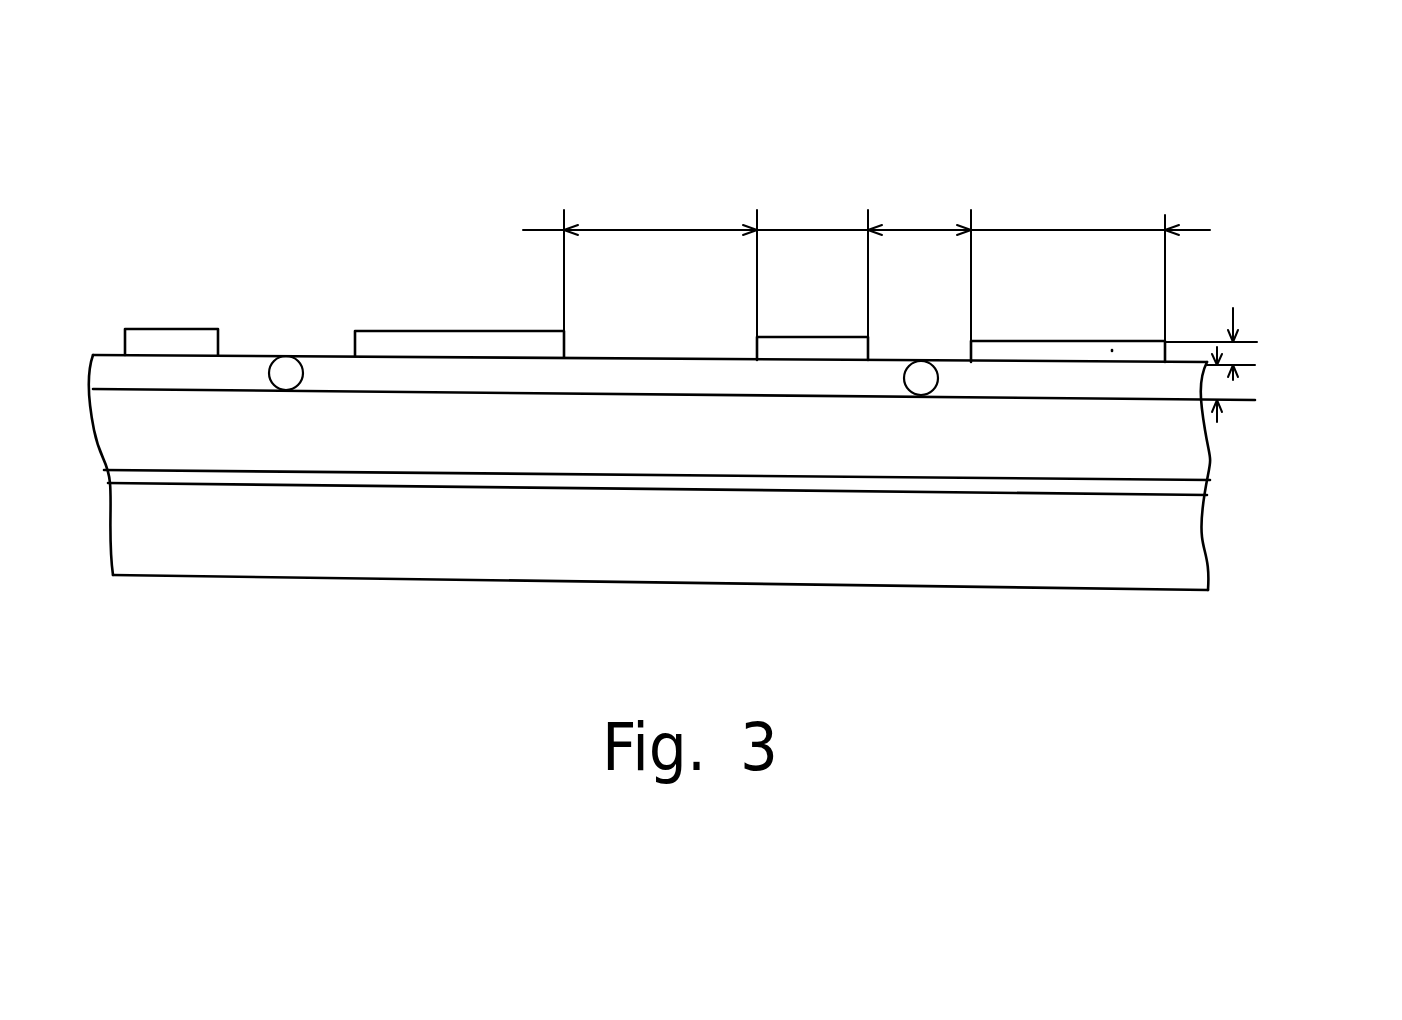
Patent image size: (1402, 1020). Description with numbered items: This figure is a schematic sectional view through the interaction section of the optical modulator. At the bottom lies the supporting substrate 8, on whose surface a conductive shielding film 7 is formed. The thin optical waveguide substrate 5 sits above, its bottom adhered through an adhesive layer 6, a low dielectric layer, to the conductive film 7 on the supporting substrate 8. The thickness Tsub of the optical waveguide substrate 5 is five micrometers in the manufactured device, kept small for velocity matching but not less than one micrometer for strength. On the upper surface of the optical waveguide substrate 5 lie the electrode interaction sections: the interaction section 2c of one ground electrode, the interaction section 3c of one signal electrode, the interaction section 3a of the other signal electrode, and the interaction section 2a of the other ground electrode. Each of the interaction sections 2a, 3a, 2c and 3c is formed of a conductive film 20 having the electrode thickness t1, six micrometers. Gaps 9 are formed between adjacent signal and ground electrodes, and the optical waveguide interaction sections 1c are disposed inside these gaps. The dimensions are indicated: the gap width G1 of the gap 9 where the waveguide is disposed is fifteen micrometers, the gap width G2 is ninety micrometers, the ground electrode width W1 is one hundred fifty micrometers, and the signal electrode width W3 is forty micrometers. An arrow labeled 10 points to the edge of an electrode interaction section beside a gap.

The optical waveguide substrate 5 is at (117, 367).
The adhesive layer 6 is at (122, 430).
The conductive film 7 is at (120, 475).
The supporting substrate 8 is at (125, 540).
The interaction section of signal electrode 3B 3c is at (185, 340).
The interaction section of ground electrode 2B 2c is at (478, 342).
The interaction section of signal electrode 3A 3a is at (787, 347).
The interaction section of ground electrode 2A 2a is at (1032, 350).
The interaction section 1c is at (287, 368).
The conductive film 20 is at (1112, 350).
The electrode edge 10 is at (752, 330).
The gap 9 is at (973, 325).
The gap width G2 is at (657, 230).
The signal electrode width W3 is at (798, 230).
The gap width G1 is at (913, 230).
The ground electrode width W1 is at (1070, 230).
The electrode thickness t1 is at (1233, 350).
The thickness of optical waveguide substrate Tsub is at (1217, 387).